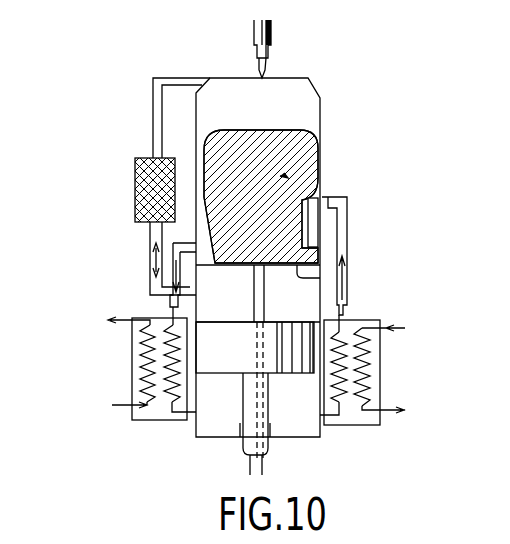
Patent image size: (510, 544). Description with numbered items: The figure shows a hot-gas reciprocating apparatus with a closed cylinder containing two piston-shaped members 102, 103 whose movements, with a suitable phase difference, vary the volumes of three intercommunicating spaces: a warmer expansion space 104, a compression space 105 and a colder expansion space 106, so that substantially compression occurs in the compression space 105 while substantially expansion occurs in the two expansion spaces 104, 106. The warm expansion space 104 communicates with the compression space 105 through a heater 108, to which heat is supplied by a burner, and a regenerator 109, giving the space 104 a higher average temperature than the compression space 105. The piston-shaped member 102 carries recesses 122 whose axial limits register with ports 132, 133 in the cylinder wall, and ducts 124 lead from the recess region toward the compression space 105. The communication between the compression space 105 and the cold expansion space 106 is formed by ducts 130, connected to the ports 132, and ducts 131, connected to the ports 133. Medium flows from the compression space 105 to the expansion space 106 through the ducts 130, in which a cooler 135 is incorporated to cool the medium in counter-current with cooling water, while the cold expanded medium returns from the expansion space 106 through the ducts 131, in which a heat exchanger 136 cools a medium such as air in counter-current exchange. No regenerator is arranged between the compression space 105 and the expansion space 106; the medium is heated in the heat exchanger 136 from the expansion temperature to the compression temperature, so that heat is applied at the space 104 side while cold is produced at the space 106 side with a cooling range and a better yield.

The piston-shaped member 102 is at (307, 146).
The piston-shaped member 103 is at (224, 362).
The expansion space 104 is at (300, 97).
The compression space 105 is at (297, 308).
The expansion space 106 is at (290, 417).
The heater 108 is at (161, 126).
The regenerator 109 is at (135, 186).
The recess 122 is at (322, 165).
The ducts 124 is at (215, 267).
The ducts 130 is at (170, 296).
The ducts 131 is at (345, 217).
The ports 132 is at (192, 247).
The ports 133 is at (318, 200).
The cooler 135 is at (140, 365).
The heat exchanger 136 is at (375, 368).